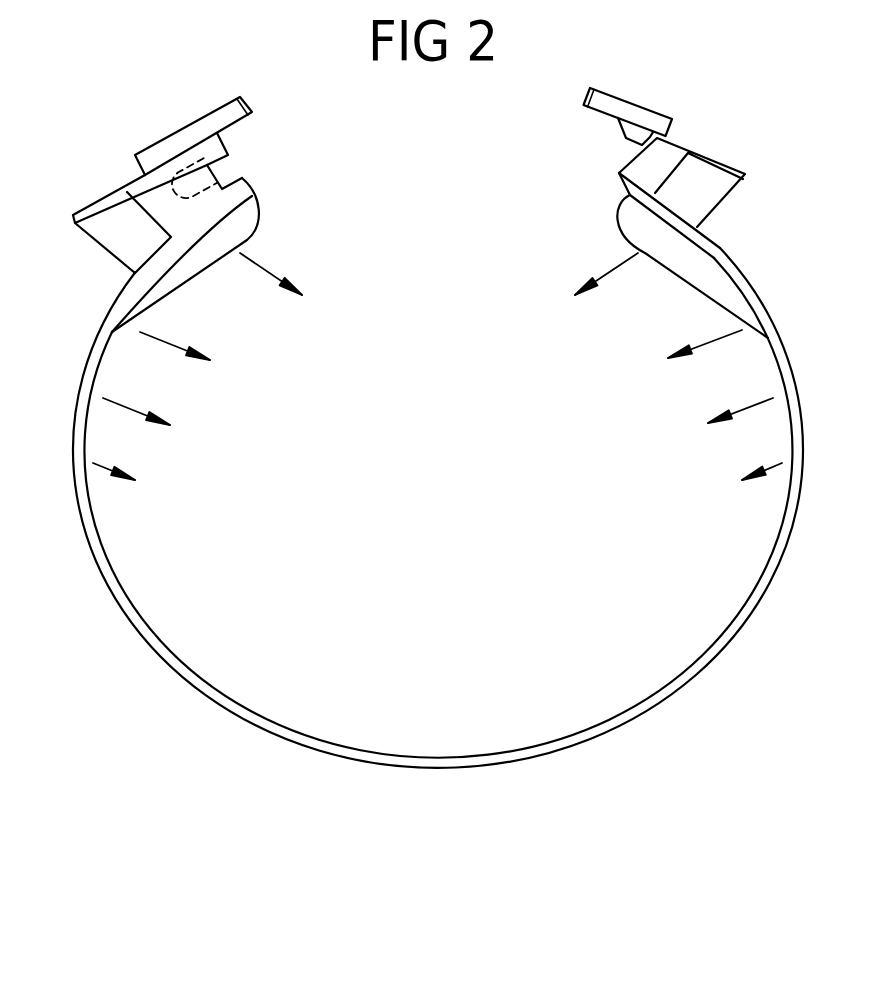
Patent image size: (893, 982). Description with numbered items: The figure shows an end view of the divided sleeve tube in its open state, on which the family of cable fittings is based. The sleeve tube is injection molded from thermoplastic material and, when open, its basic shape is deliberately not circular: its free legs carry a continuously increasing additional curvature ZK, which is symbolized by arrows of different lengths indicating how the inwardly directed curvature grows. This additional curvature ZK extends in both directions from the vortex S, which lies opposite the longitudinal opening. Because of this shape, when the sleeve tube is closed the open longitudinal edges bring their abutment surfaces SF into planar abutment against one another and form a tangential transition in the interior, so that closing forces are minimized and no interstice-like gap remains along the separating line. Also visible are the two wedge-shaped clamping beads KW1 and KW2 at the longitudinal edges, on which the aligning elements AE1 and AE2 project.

The vortex S is at (438, 755).
The wedge-shaped clamping bead KW1 is at (116, 238).
The wedge-shaped clamping bead KW2 is at (712, 188).
The aligning element AE1 is at (221, 115).
The aligning element AE2 is at (662, 119).
The abutment surface SF is at (226, 141).
The additional curvature ZK is at (100, 464).